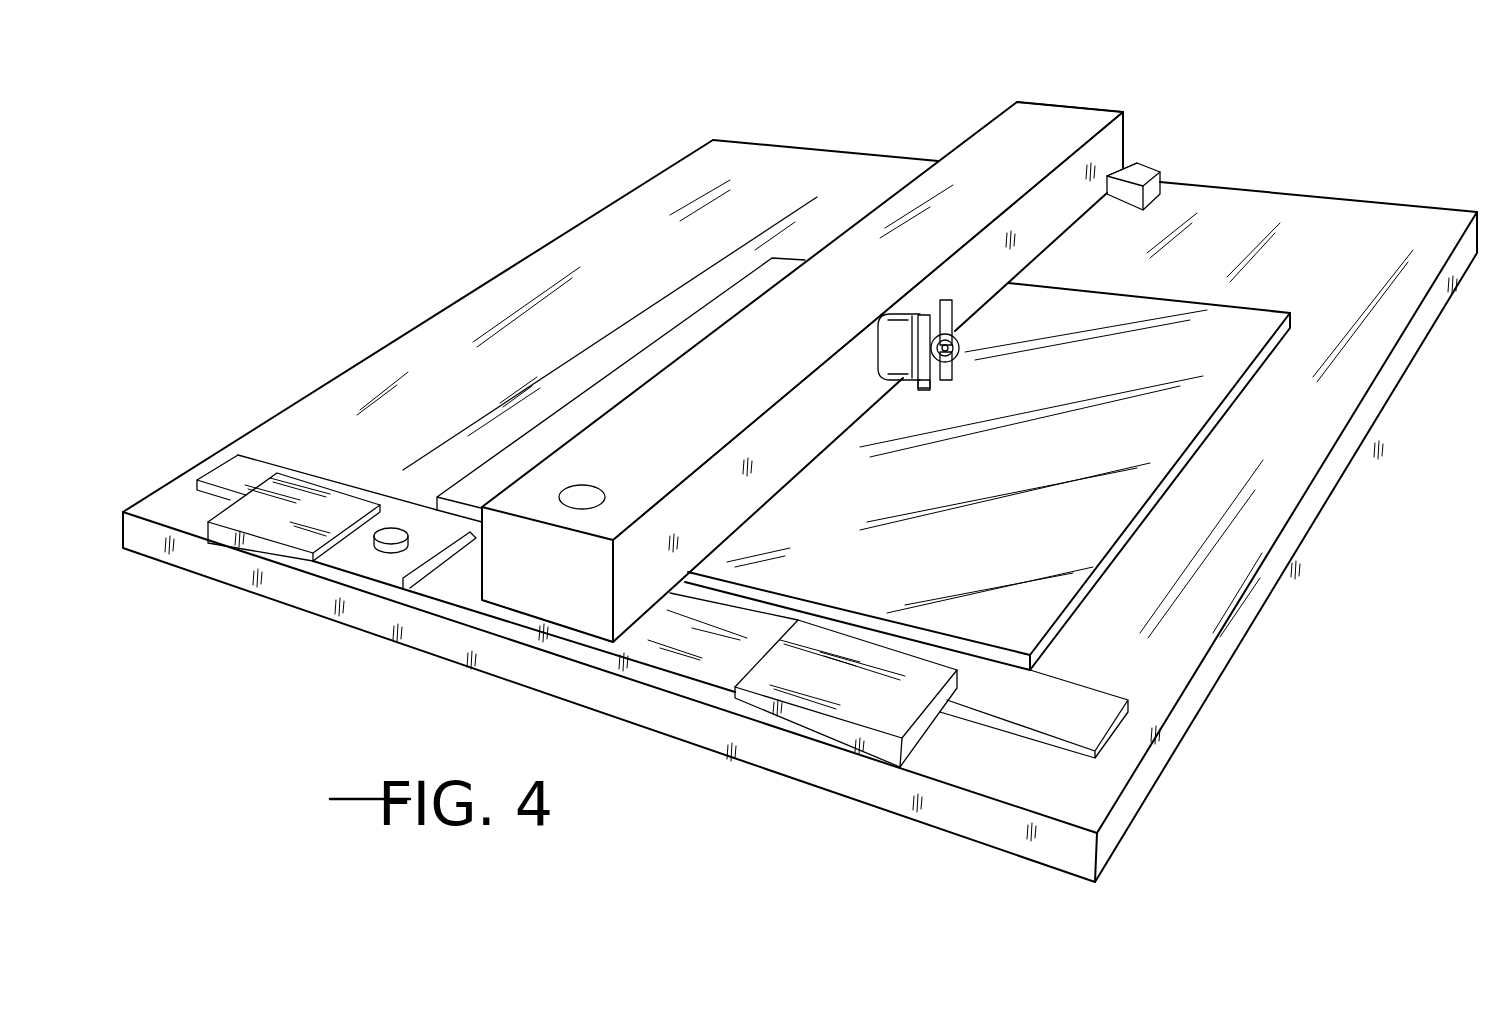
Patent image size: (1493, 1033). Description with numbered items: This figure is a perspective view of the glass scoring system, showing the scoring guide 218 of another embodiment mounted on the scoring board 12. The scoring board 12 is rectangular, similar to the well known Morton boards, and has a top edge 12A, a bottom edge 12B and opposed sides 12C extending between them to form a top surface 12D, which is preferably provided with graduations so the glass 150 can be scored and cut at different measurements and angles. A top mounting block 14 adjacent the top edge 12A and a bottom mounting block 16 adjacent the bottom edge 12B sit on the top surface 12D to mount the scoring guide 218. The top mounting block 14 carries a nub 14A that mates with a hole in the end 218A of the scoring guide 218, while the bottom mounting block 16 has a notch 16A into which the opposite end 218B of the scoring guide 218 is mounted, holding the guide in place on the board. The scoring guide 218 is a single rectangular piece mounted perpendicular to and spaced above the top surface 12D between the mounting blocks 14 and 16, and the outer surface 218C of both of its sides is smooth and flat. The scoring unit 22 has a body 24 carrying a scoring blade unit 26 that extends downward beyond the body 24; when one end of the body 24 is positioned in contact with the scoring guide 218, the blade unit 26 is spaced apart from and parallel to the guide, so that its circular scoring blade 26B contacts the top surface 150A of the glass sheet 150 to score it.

The scoring board 12 is at (1230, 567).
The top edge 12A is at (950, 805).
The bottom edge 12B is at (1405, 203).
The opposed sides 12C is at (415, 325).
The top surface 12D is at (1320, 262).
The top mounting block 14 is at (590, 650).
The nub 14A is at (583, 495).
The bottom mounting block 16 is at (1150, 160).
The notch 16A is at (1130, 160).
The scoring unit 22 is at (953, 349).
The body 24 is at (890, 347).
The scoring blade unit 26 is at (952, 313).
The scoring blade 26B is at (928, 388).
The glass sheet 150 is at (1170, 465).
The top surface of the glass sheet 150A is at (1165, 417).
The scoring guide 218 is at (780, 453).
The end of the scoring guide 218A is at (527, 588).
The end of the scoring guide 218B is at (1079, 107).
The outer surface 218C is at (870, 210).